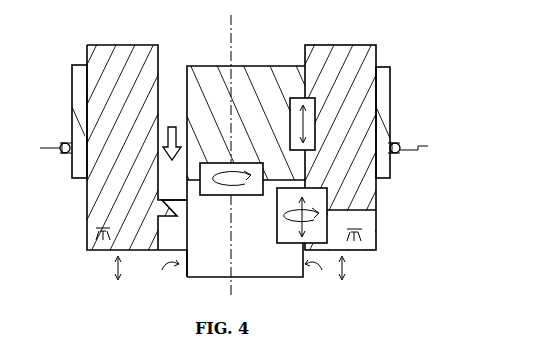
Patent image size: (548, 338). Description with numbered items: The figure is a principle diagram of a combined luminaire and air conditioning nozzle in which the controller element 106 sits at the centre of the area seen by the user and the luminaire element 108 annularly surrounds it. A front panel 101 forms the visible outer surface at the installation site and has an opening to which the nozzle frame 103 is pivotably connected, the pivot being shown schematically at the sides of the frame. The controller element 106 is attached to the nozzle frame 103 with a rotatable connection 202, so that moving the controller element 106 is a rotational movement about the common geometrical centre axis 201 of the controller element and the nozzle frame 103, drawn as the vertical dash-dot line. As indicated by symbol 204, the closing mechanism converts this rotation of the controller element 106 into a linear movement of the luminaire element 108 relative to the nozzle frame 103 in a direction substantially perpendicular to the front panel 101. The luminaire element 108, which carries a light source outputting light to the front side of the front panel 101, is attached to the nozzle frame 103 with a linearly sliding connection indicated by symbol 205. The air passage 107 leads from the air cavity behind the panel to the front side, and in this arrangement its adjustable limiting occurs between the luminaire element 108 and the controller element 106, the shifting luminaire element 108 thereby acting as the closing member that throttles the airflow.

The front panel 101 is at (428, 149).
The nozzle frame 103 is at (386, 67).
The controller element 106 is at (186, 279).
The air passage 107 is at (187, 70).
The luminaire element 108 is at (378, 216).
The common geometrical centre axis 201 is at (236, 44).
The rotatable connection 202 is at (239, 163).
The symbol for conversion of rotational into linear movement 204 is at (330, 208).
The linearly sliding connection 205 is at (316, 117).